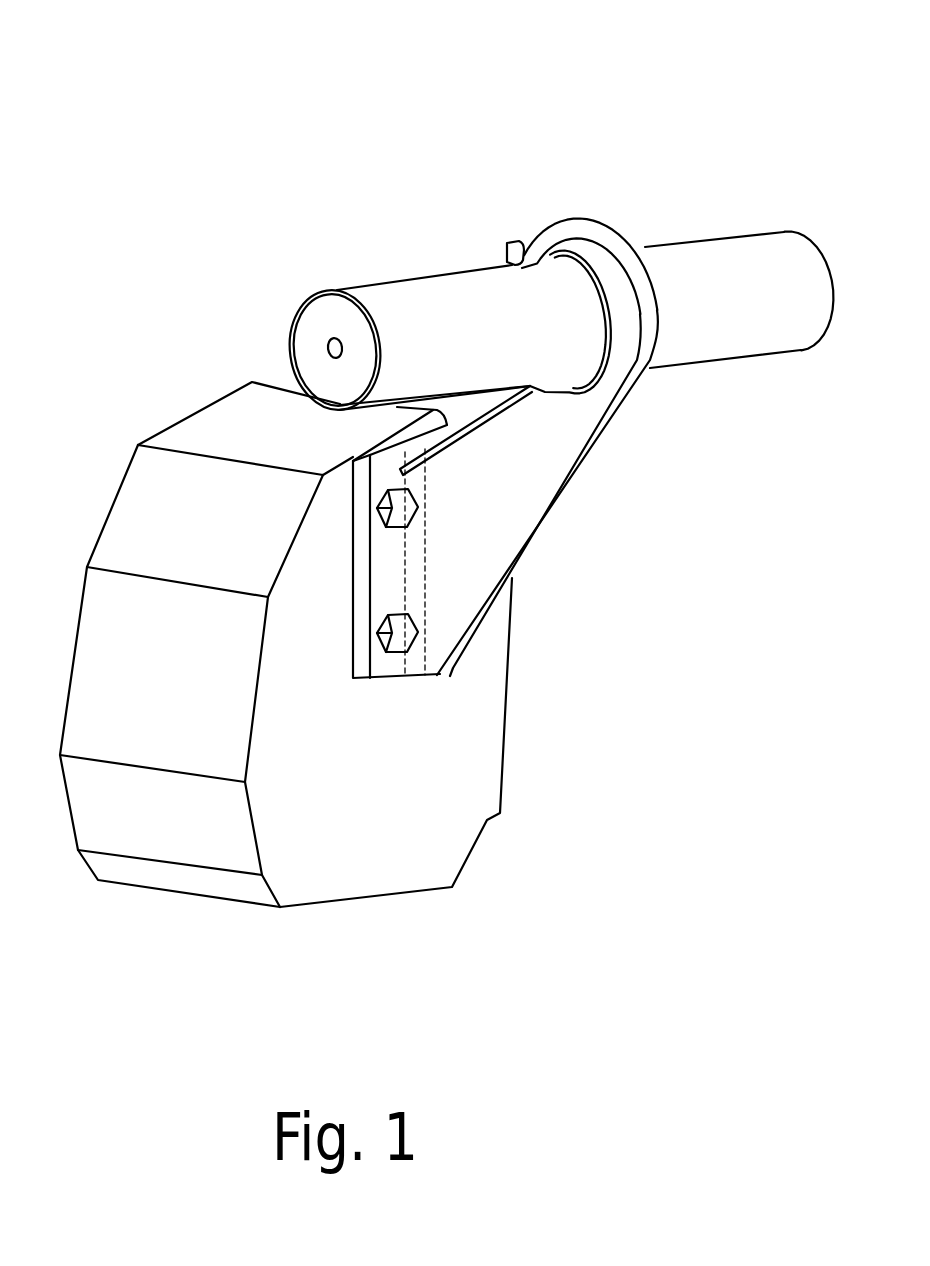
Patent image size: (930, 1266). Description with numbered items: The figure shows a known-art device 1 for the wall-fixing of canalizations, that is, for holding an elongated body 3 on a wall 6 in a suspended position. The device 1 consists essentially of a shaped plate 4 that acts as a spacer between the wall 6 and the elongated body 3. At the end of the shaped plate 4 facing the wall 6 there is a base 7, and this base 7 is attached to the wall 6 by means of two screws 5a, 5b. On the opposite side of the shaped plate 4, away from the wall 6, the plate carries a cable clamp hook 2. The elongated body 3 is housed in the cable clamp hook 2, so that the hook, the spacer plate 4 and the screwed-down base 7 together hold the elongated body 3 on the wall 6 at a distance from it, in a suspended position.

The device 1 is at (175, 168).
The cable clamp hook 2 is at (577, 237).
The elongated body 3 is at (748, 275).
The shaped plate 4 is at (517, 475).
The screw 5a is at (395, 503).
The screw 5b is at (395, 632).
The wall 6 is at (412, 800).
The base 7 is at (386, 575).